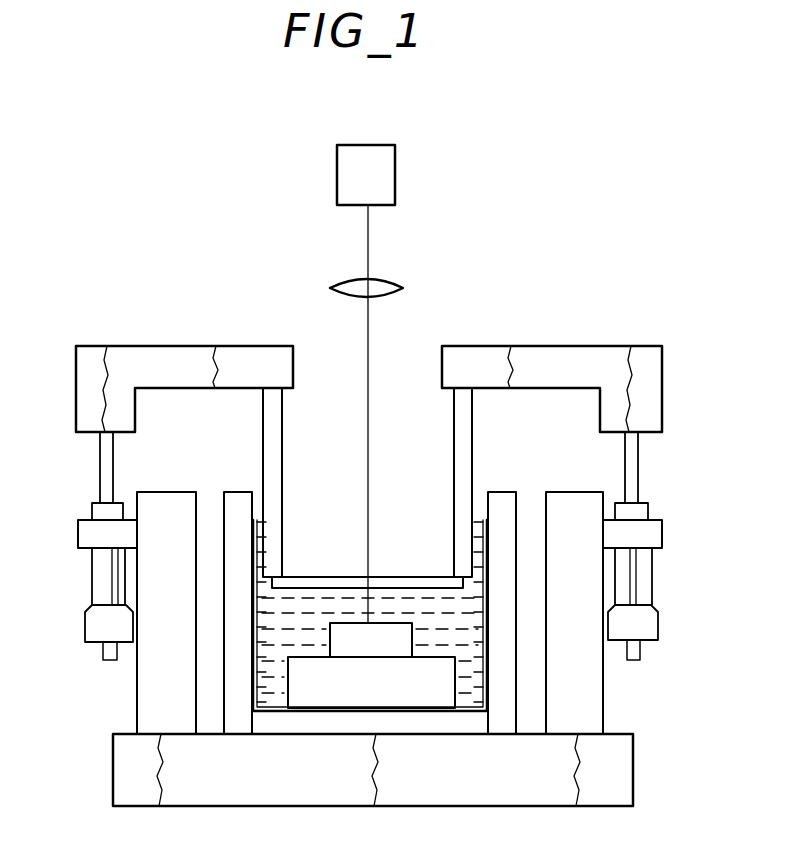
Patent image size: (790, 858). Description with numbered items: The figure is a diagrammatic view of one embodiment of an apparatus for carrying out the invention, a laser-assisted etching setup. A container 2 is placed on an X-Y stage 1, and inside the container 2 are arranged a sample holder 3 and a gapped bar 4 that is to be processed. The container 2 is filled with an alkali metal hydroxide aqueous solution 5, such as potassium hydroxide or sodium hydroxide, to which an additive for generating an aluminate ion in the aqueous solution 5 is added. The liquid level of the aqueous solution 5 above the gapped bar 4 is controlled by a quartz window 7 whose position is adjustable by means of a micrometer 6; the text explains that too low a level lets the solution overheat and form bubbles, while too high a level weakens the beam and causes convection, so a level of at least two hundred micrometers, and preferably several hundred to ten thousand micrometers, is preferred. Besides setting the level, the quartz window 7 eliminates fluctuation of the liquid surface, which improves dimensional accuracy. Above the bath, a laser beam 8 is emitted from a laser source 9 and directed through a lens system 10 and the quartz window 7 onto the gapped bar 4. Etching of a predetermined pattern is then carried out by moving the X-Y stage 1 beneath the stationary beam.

The X-Y stage 1 is at (405, 787).
The container 2 is at (503, 695).
The sample holder 3 is at (433, 688).
The gapped bar 4 is at (398, 635).
The alkali metal hydroxide aqueous solution 5 is at (283, 627).
The micrometer 6 is at (92, 578).
The quartz window 7 is at (398, 577).
The laser beam 8 is at (368, 240).
The laser source 9 is at (388, 168).
The lens system 10 is at (400, 290).